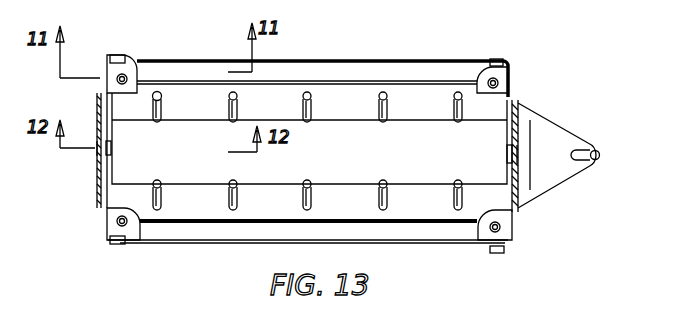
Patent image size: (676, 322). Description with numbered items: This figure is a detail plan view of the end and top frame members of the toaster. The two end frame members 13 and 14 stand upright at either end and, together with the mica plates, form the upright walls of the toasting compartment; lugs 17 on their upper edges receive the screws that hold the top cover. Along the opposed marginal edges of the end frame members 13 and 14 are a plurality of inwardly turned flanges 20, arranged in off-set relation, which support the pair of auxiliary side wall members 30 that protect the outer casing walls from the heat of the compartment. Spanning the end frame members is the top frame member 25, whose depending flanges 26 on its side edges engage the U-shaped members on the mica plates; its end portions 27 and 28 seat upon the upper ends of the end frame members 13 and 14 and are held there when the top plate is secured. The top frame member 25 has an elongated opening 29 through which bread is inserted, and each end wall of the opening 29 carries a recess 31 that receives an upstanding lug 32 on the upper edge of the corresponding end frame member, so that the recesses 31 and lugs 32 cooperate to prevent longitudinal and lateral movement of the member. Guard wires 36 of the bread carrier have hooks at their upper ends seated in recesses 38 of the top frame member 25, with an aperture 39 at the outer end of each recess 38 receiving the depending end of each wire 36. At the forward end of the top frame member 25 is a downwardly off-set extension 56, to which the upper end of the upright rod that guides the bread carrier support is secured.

The end frame member 13 is at (106, 237).
The end frame member 14 is at (505, 243).
The lug 17 is at (126, 75).
The inwardly turned flange 20 is at (116, 56).
The top frame member 25 is at (343, 105).
The depending flange 26 is at (365, 85).
The end portion 27 is at (97, 186).
The end portion 28 is at (514, 113).
The elongated opening 29 is at (330, 165).
The auxiliary side wall member 30 is at (340, 61).
The recess 31 is at (97, 152).
The upstanding lug 32 is at (112, 149).
The guard wire 36 is at (305, 184).
The recess 38 is at (159, 108).
The aperture 39 is at (162, 97).
The extension 56 is at (558, 172).